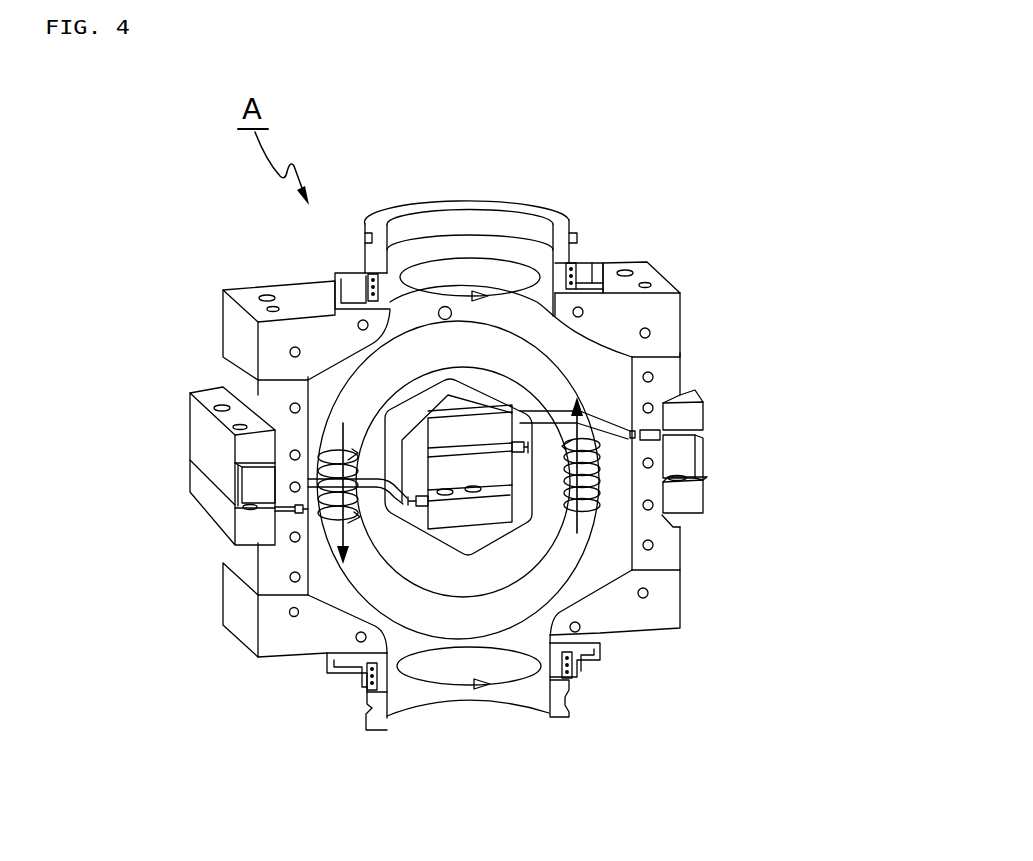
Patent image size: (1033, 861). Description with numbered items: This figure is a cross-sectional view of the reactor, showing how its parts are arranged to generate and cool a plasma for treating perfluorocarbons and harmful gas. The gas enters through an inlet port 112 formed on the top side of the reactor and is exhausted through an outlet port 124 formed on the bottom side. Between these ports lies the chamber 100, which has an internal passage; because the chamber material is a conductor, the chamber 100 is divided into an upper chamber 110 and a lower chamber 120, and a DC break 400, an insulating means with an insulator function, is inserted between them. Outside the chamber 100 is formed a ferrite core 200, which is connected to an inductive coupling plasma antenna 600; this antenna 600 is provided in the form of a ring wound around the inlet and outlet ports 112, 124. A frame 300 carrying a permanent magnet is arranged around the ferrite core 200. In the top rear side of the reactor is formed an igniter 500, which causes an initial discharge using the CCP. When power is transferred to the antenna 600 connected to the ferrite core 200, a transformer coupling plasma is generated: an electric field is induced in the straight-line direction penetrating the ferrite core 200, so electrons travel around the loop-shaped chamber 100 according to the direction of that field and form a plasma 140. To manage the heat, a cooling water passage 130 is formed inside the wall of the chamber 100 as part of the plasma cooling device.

The chamber 100 is at (705, 298).
The upper chamber 110 is at (666, 326).
The inlet port 112 is at (462, 228).
The lower chamber 120 is at (668, 547).
The outlet port 124 is at (472, 695).
The cooling water passage 130 is at (296, 620).
The plasma 140 is at (541, 578).
The ferrite core 200 is at (257, 483).
The frame 300 is at (207, 418).
The DC break 400 is at (652, 440).
The igniter 500 is at (438, 320).
The inductive coupling plasma antenna 600 is at (576, 276).